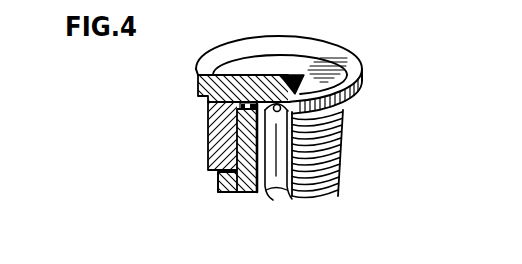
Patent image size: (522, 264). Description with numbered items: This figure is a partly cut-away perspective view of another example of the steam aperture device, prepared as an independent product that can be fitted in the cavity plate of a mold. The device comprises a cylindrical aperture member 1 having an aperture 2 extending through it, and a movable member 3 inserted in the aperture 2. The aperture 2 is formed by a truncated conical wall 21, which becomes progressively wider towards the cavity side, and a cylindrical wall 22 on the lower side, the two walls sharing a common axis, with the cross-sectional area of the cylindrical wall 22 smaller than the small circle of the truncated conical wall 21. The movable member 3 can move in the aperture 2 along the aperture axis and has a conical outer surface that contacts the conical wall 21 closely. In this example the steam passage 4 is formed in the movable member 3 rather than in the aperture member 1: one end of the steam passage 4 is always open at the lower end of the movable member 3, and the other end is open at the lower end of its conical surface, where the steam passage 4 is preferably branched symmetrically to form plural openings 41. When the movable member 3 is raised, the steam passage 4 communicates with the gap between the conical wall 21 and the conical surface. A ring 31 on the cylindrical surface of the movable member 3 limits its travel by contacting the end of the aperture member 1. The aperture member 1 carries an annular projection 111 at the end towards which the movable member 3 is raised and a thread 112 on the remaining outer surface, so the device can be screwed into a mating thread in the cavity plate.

The aperture member 1 is at (194, 80).
The annular projection 111 is at (351, 100).
The thread 112 is at (346, 151).
The aperture 2 is at (105, 108).
The truncated conical wall 21 is at (207, 112).
The cylindrical wall 22 is at (207, 133).
The movable member 3 is at (282, 74).
The ring 31 is at (218, 192).
The steam passage 4 is at (271, 199).
The openings 41 is at (247, 75).